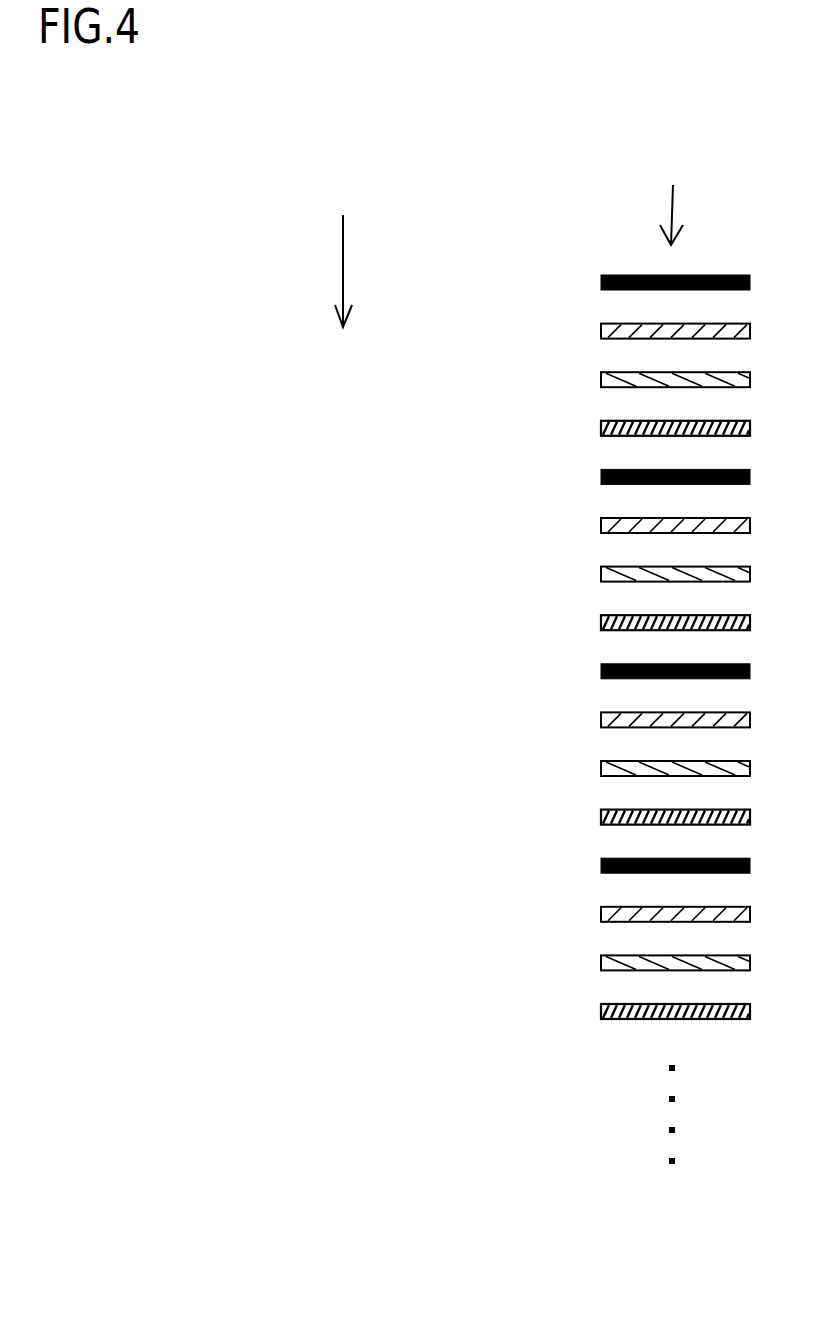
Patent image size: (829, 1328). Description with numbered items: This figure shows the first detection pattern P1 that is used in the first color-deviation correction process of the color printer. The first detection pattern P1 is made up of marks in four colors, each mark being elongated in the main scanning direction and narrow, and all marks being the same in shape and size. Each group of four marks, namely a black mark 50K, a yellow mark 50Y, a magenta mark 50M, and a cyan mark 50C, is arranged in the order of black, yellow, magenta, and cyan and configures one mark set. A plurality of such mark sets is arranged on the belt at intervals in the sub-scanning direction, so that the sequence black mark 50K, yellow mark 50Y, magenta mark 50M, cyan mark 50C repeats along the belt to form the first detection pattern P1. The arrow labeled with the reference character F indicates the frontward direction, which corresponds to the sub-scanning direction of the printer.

The black mark 50K is at (600, 283).
The yellow mark 50Y is at (600, 331).
The magenta mark 50M is at (600, 380).
The cyan mark 50C is at (600, 429).
The first detection pattern P1 is at (673, 188).
The frontward direction F is at (344, 295).